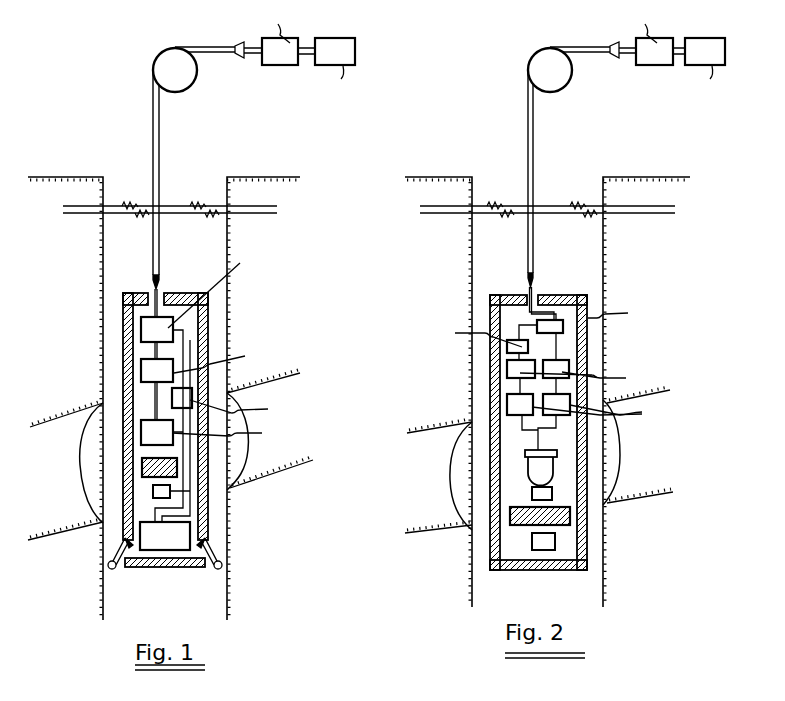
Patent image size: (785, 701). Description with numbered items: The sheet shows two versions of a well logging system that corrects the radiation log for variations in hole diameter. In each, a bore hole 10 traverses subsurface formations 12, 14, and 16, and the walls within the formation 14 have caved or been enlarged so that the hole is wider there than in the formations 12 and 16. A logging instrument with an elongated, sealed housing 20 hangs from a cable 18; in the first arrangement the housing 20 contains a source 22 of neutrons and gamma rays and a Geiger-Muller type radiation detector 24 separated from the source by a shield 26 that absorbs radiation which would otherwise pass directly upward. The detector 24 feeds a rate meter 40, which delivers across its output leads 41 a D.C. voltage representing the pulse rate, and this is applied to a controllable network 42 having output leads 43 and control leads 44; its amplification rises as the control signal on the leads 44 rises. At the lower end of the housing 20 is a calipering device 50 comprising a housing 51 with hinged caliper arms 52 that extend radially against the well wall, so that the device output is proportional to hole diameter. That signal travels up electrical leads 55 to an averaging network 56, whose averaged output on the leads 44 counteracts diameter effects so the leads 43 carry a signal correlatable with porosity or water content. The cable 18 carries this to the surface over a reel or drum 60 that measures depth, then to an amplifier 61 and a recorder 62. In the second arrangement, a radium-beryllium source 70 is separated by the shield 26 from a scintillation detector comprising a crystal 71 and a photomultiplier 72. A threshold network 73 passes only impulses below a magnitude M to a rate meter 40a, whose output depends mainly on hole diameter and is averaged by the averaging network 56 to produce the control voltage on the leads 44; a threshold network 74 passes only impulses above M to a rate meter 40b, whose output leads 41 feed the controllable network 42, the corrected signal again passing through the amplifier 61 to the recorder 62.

In FIG. 1, the bore hole 10 is at (218, 230).
In FIG. 2, the bore hole 10 is at (595, 230).
In FIG. 1, the subsurface formation 12 is at (52, 311).
In FIG. 2, the subsurface formation 12 is at (425, 241).
In FIG. 1, the subsurface formation 14 is at (170, 455).
In FIG. 2, the subsurface formation 14 is at (539, 460).
In FIG. 1, the subsurface formation 16 is at (49, 586).
In FIG. 2, the subsurface formation 16 is at (422, 574).
In FIG. 1, the cable 18 is at (159, 150).
In FIG. 2, the cable 18 is at (533, 150).
In FIG. 1, the housing 20 is at (207, 523).
In FIG. 2, the housing 20 is at (490, 297).
In FIG. 1, the source 22 is at (170, 492).
In FIG. 1, the radiation detector 24 is at (243, 432).
In FIG. 1, the shield 26 is at (178, 468).
In FIG. 2, the shield 26 is at (570, 515).
In FIG. 1, the rate meter 40 is at (220, 355).
In FIG. 2, the rate meter 40a is at (525, 376).
In FIG. 2, the rate meter 40b is at (568, 370).
In FIG. 1, the output leads 41 is at (134, 357).
In FIG. 2, the output leads 41 is at (556, 348).
In FIG. 1, the controllable network 42 is at (238, 294).
In FIG. 2, the controllable network 42 is at (563, 323).
In FIG. 1, the output leads 43 is at (132, 282).
In FIG. 2, the output leads 43 is at (538, 288).
In FIG. 1, the control leads 44 is at (187, 343).
In FIG. 2, the control leads 44 is at (519, 323).
In FIG. 1, the calipering device 50 is at (188, 537).
In FIG. 1, the housing 51 is at (165, 536).
In FIG. 1, the caliper arms 52 is at (181, 573).
In FIG. 1, the electrical leads 55 is at (122, 452).
In FIG. 1, the averaging network 56 is at (192, 392).
In FIG. 2, the averaging network 56 is at (518, 350).
In FIG. 1, the reel or drum 60 is at (175, 70).
In FIG. 2, the reel or drum 60 is at (550, 70).
In FIG. 1, the amplifier 61 is at (262, 36).
In FIG. 2, the amplifier 61 is at (630, 36).
In FIG. 1, the recorder 62 is at (345, 66).
In FIG. 2, the recorder 62 is at (709, 66).
In FIG. 2, the radium-beryllium source 70 is at (555, 540).
In FIG. 2, the crystal 71 is at (552, 493).
In FIG. 2, the photomultiplier 72 is at (545, 468).
In FIG. 2, the threshold network 73 is at (623, 414).
In FIG. 2, the threshold network 74 is at (590, 422).